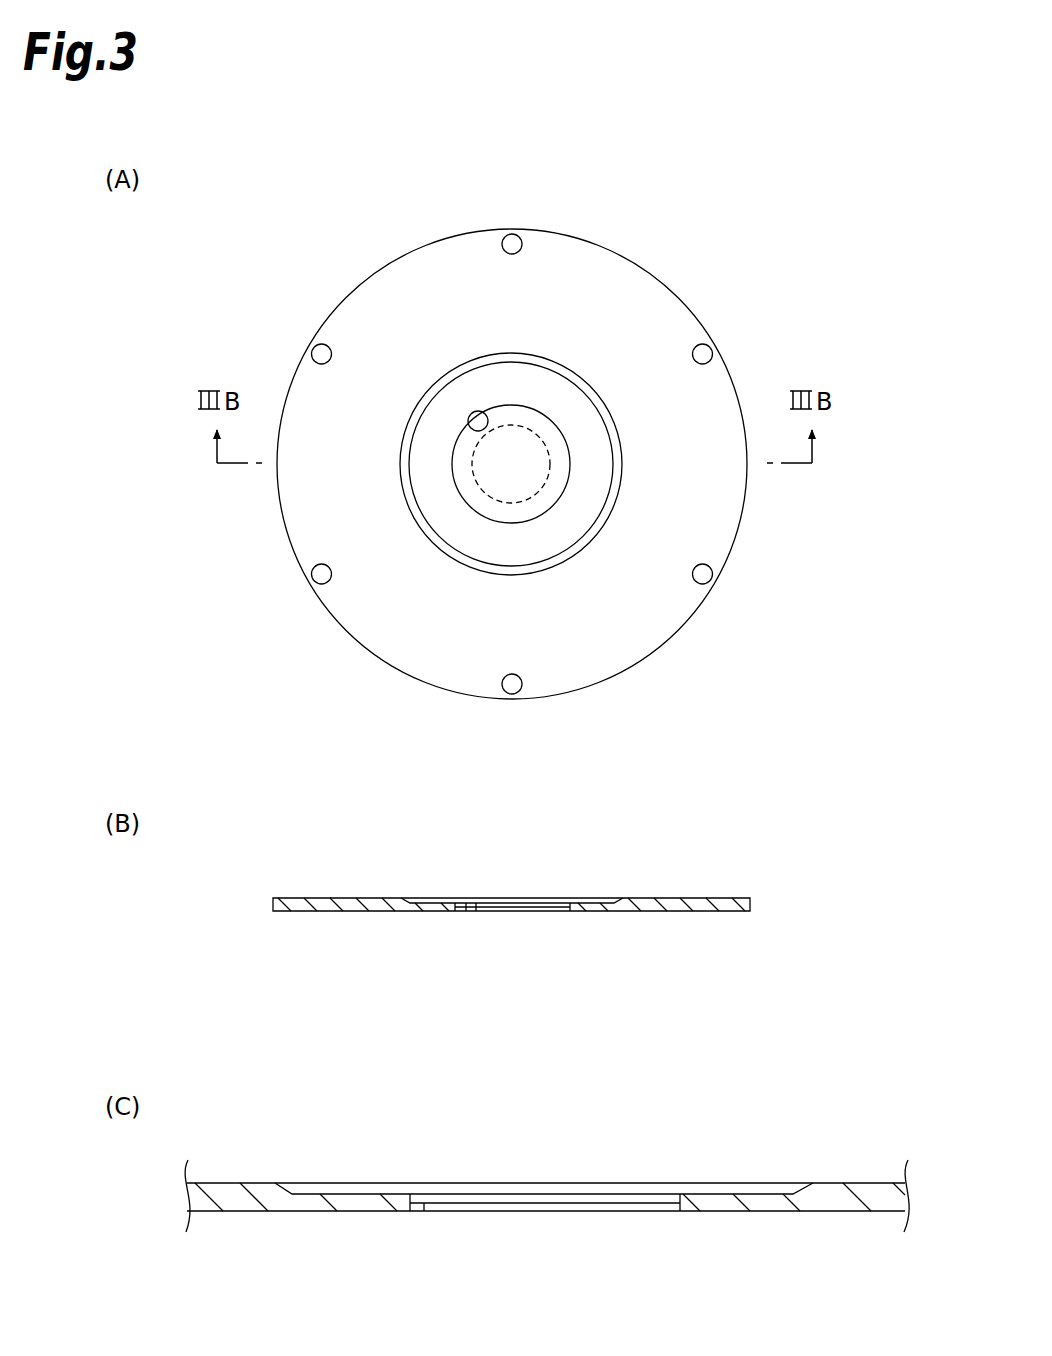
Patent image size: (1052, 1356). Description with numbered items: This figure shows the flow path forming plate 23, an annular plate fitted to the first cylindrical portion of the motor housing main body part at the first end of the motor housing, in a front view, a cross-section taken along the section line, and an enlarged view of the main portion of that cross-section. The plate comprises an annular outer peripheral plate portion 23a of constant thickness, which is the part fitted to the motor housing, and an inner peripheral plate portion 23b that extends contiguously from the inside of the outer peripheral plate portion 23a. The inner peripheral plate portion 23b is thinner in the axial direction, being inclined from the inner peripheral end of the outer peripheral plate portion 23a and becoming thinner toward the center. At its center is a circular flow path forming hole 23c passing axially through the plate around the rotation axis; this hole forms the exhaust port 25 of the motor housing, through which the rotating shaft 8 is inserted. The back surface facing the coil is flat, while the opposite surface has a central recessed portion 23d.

The flow path forming plate 23 is at (665, 279).
The outer peripheral plate portion 23a is at (605, 652).
The inner peripheral plate portion 23b is at (583, 912).
The flow path forming hole 23c is at (475, 412).
The recessed portion 23d is at (493, 540).
The exhaust port 25 is at (530, 420).
The rotating shaft 8 is at (477, 485).